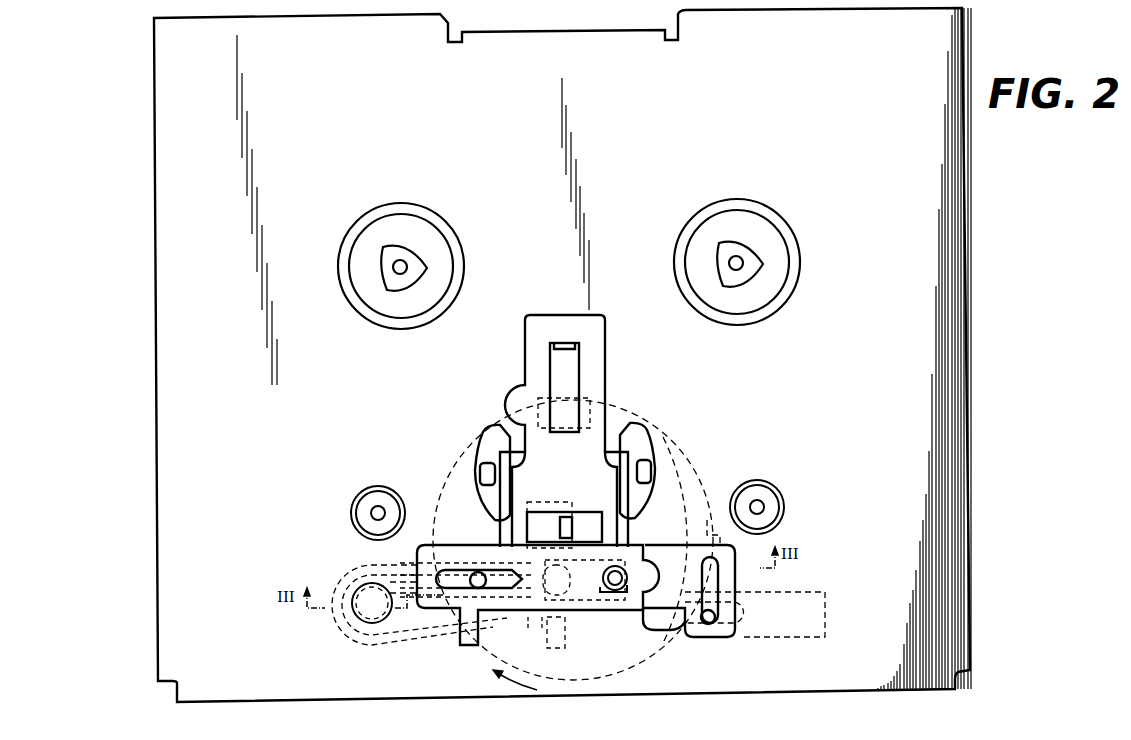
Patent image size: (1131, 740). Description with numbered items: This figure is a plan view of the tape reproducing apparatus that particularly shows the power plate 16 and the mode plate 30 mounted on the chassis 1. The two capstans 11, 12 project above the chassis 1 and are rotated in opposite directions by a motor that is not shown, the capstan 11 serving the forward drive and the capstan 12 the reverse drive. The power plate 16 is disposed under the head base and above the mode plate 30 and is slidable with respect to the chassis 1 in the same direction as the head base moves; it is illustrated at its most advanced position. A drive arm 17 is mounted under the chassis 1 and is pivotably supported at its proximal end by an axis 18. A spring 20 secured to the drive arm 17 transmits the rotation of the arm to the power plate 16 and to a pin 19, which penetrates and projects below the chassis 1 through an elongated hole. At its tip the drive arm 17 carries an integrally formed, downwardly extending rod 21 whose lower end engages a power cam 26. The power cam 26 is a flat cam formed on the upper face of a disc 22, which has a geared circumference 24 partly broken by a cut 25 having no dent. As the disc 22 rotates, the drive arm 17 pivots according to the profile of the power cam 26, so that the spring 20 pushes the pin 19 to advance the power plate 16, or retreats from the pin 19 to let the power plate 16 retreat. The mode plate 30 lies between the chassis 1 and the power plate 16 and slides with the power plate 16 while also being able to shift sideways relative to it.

The chassis 1 is at (537, 37).
The capstan 11 is at (760, 502).
The capstan 12 is at (377, 508).
The power plate 16 is at (517, 533).
The drive arm 17 is at (440, 637).
The axis 18 is at (358, 632).
The pin 19 is at (613, 588).
The spring 20 is at (526, 617).
The rod 21 is at (557, 620).
The disc 22 is at (633, 407).
The geared circumference 24 is at (448, 477).
The cut 25 is at (685, 458).
The power cam 26 is at (673, 490).
The mode plate 30 is at (663, 562).